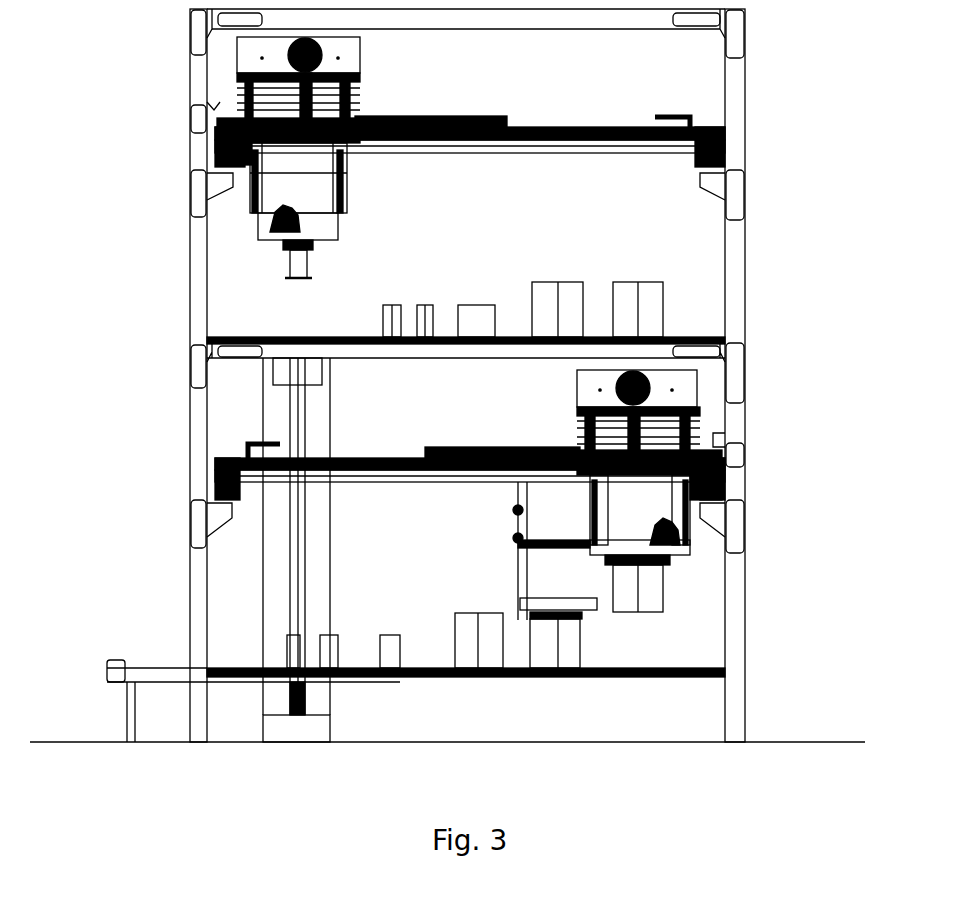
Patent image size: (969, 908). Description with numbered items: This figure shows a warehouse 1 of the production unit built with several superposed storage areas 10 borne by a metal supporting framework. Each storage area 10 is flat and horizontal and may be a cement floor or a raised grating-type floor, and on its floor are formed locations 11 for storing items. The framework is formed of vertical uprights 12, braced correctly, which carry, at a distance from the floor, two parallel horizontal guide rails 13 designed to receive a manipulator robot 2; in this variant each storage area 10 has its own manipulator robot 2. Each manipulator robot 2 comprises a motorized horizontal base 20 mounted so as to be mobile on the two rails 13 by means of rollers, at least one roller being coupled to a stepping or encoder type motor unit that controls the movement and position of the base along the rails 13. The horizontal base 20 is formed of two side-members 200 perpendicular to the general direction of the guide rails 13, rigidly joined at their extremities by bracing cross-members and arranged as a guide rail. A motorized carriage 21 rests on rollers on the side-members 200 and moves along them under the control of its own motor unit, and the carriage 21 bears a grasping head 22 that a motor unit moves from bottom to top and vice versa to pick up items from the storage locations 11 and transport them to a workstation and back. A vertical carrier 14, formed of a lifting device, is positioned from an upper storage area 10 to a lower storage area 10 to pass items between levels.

The warehouse 1 is at (767, 97).
The manipulator robot 2 is at (362, 180).
The storage area 10 is at (360, 330).
The storage location 11 is at (633, 678).
The vertical upright 12 is at (190, 268).
The guide rail 13 is at (190, 170).
The vertical carrier 14 is at (275, 559).
The horizontal base 20 is at (527, 156).
The side-member 200 is at (505, 123).
The motorized carriage 21 is at (362, 97).
The grasping head 22 is at (322, 265).